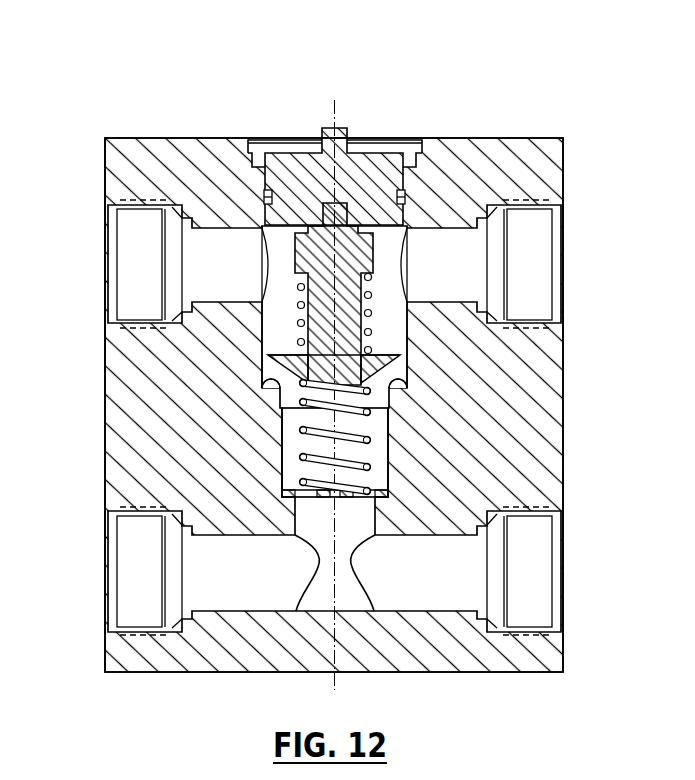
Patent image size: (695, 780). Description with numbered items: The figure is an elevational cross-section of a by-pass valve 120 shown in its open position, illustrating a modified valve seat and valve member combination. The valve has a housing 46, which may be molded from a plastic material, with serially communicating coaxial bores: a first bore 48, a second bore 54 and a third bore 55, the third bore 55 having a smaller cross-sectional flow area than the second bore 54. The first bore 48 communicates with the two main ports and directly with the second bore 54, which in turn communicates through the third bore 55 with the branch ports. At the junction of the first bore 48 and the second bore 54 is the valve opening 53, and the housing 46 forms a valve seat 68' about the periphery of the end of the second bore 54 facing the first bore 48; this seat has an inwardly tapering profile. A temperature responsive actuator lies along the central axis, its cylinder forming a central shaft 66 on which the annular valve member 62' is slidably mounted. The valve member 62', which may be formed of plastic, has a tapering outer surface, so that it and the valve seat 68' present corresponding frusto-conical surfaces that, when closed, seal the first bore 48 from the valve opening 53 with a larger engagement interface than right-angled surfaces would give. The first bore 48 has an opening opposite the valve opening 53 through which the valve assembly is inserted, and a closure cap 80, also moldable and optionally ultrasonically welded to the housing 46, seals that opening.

The by-pass valve 120 is at (530, 114).
The housing 46 is at (175, 138).
The closure cap 80 is at (372, 168).
The central shaft 66 is at (313, 300).
The first bore 48 is at (277, 332).
The annular valve member 62' is at (444, 347).
The valve seat 68' is at (339, 403).
The valve opening 53 is at (390, 437).
The second bore 54 is at (293, 467).
The third bore 55 is at (353, 520).